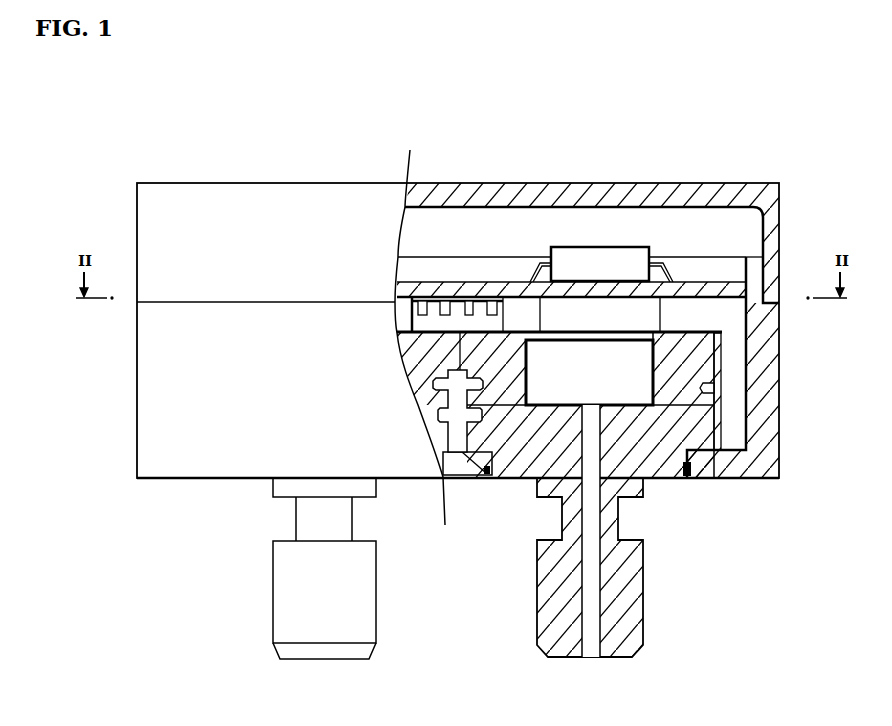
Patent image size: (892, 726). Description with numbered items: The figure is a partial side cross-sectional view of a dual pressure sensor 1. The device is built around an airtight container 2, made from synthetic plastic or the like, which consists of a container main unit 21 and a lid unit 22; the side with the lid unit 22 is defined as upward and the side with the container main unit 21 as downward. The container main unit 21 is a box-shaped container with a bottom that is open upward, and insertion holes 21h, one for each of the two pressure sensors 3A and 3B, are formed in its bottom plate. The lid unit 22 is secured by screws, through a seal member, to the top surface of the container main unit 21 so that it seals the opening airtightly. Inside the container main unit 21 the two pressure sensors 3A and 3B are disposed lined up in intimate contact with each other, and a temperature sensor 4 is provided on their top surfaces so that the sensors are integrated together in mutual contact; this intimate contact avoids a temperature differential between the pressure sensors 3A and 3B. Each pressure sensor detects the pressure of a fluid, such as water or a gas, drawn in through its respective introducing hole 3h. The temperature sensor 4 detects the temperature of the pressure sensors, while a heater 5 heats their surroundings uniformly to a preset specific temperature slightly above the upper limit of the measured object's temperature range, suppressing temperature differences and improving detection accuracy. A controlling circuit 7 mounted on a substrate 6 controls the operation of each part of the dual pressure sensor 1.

The dual pressure sensor 1 is at (444, 131).
The airtight container 2 is at (845, 312).
The container main unit 21 is at (753, 343).
The lid unit 22 is at (772, 287).
The insertion hole 21h is at (497, 468).
The pressure sensor 3A is at (692, 373).
The pressure sensor 3B is at (376, 608).
The introducing hole 3h is at (592, 659).
The temperature sensor 4 is at (494, 310).
The heater 5 is at (720, 427).
The substrate 6 is at (700, 282).
The controlling circuit 7 is at (612, 262).